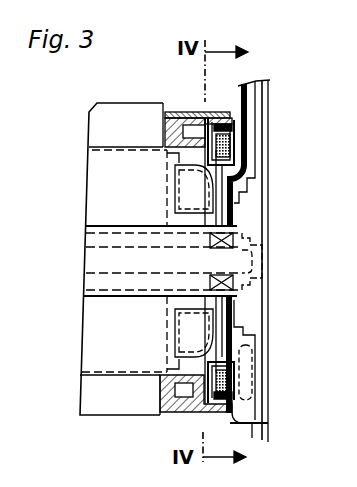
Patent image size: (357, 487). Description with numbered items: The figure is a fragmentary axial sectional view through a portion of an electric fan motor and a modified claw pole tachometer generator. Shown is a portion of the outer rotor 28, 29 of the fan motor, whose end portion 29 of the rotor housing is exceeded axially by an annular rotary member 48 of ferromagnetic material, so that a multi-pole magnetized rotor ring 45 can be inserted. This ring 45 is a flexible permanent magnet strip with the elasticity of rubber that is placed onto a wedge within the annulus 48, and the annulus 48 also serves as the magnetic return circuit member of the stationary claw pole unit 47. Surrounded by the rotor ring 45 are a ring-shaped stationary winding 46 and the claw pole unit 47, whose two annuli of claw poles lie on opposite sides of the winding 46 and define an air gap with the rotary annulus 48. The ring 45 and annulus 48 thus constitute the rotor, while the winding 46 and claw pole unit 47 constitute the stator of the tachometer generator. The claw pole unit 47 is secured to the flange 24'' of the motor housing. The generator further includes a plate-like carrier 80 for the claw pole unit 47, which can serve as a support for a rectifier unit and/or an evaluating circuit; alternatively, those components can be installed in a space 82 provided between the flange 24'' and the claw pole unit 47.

The outer rotor 28 is at (108, 402).
The end portion of the rotor housing 29 is at (160, 413).
The annular rotary member 48 is at (180, 111).
The multi-pole magnetized rotor ring 45 is at (215, 112).
The stationary winding 46 is at (232, 141).
The stationary claw pole unit 47 is at (243, 127).
The plate-like carrier 80 is at (234, 214).
The space 82 is at (256, 176).
The flange of the motor housing 24'' is at (203, 259).